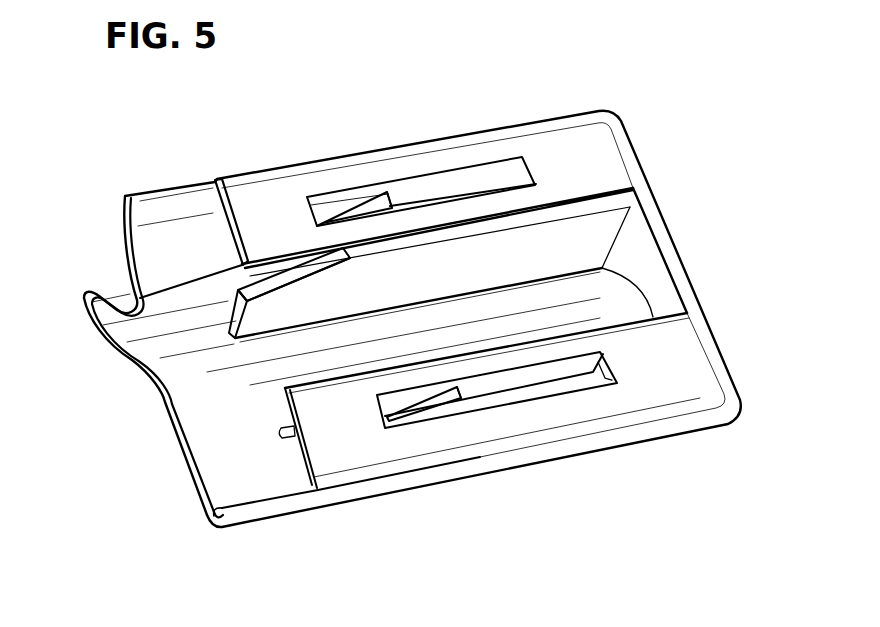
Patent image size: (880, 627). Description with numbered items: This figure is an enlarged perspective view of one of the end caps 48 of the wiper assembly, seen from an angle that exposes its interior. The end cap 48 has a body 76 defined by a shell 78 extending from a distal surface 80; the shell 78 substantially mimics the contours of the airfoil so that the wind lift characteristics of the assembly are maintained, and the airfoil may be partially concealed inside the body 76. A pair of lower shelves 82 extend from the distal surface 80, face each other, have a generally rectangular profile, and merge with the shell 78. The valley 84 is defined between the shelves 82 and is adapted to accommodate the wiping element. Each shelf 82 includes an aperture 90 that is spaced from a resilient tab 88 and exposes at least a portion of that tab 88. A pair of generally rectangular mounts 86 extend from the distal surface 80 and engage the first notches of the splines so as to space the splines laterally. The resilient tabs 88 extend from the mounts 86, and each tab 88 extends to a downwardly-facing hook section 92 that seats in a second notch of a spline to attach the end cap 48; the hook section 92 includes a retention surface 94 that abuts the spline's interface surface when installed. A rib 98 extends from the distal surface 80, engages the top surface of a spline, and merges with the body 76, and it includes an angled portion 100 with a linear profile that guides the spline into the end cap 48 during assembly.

The end cap 48 is at (704, 176).
The body 76 is at (297, 509).
The shell 78 is at (193, 458).
The distal surface 80 is at (655, 280).
The lower shelf 82 is at (261, 198).
The valley 84 is at (577, 334).
The mount 86 is at (610, 379).
The resilient tab 88 is at (515, 397).
The aperture 90 is at (432, 177).
The hook section 92 is at (355, 213).
The retention surface 94 is at (389, 213).
The rib 98 is at (259, 318).
The angled portion 100 is at (262, 290).